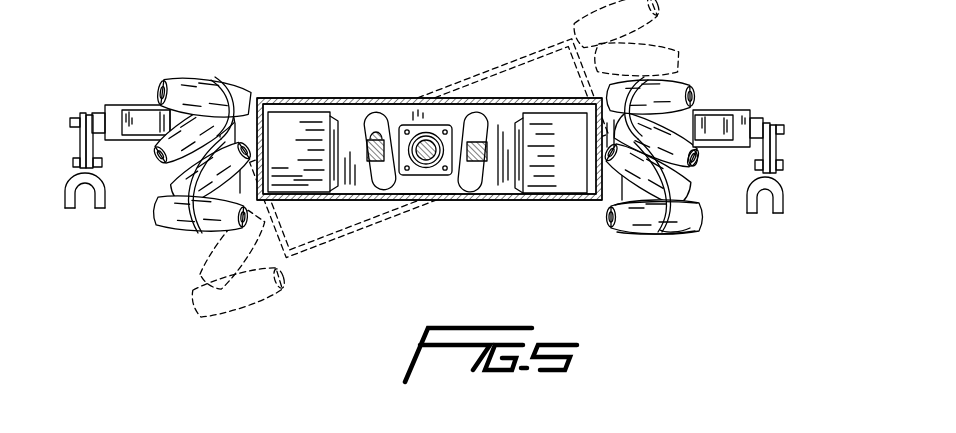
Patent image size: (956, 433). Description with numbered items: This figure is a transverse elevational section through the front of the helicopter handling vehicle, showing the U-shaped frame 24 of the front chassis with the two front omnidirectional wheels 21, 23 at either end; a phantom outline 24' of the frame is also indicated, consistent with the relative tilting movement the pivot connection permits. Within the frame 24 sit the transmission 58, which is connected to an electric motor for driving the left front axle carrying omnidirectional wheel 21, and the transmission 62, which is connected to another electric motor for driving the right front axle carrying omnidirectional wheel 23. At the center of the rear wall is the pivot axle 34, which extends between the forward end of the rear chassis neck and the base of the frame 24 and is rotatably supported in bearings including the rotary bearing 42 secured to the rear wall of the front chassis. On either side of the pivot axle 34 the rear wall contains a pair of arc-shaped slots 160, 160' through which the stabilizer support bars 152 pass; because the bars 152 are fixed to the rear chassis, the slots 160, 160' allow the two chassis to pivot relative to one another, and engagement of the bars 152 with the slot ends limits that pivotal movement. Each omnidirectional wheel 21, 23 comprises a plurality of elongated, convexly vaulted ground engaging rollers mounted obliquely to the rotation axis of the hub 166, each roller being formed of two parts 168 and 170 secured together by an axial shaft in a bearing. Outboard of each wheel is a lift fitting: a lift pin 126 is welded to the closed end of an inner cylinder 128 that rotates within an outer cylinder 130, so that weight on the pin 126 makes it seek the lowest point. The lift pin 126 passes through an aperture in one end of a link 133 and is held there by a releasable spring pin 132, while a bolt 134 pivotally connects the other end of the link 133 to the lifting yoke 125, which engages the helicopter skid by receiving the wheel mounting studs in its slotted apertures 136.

The omnidirectional wheel 21 is at (687, 68).
The omnidirectional wheel 23 is at (173, 72).
The frame 24 is at (420, 117).
The housing in tilted position 24' is at (428, 163).
The pivot axle 34 is at (417, 130).
The rotary bearing 42 is at (410, 187).
The transmission 58 is at (562, 183).
The transmission 62 is at (318, 186).
The lifting yoke 125 is at (780, 213).
The lift pin 126 is at (783, 133).
The inner cylinder 128 is at (755, 117).
The outer cylinder 130 is at (713, 110).
The releasable spring pin 132 is at (777, 128).
The link 133 is at (777, 147).
The bolt 134 is at (778, 167).
The slotted apertures 136 is at (783, 203).
The stabilizer support bars 152 is at (358, 187).
The arc-shaped slots 160 is at (414, 168).
The actuator piston 160' is at (427, 161).
The hub 166 is at (697, 200).
The roller part 168 is at (696, 158).
The roller part 170 is at (680, 233).